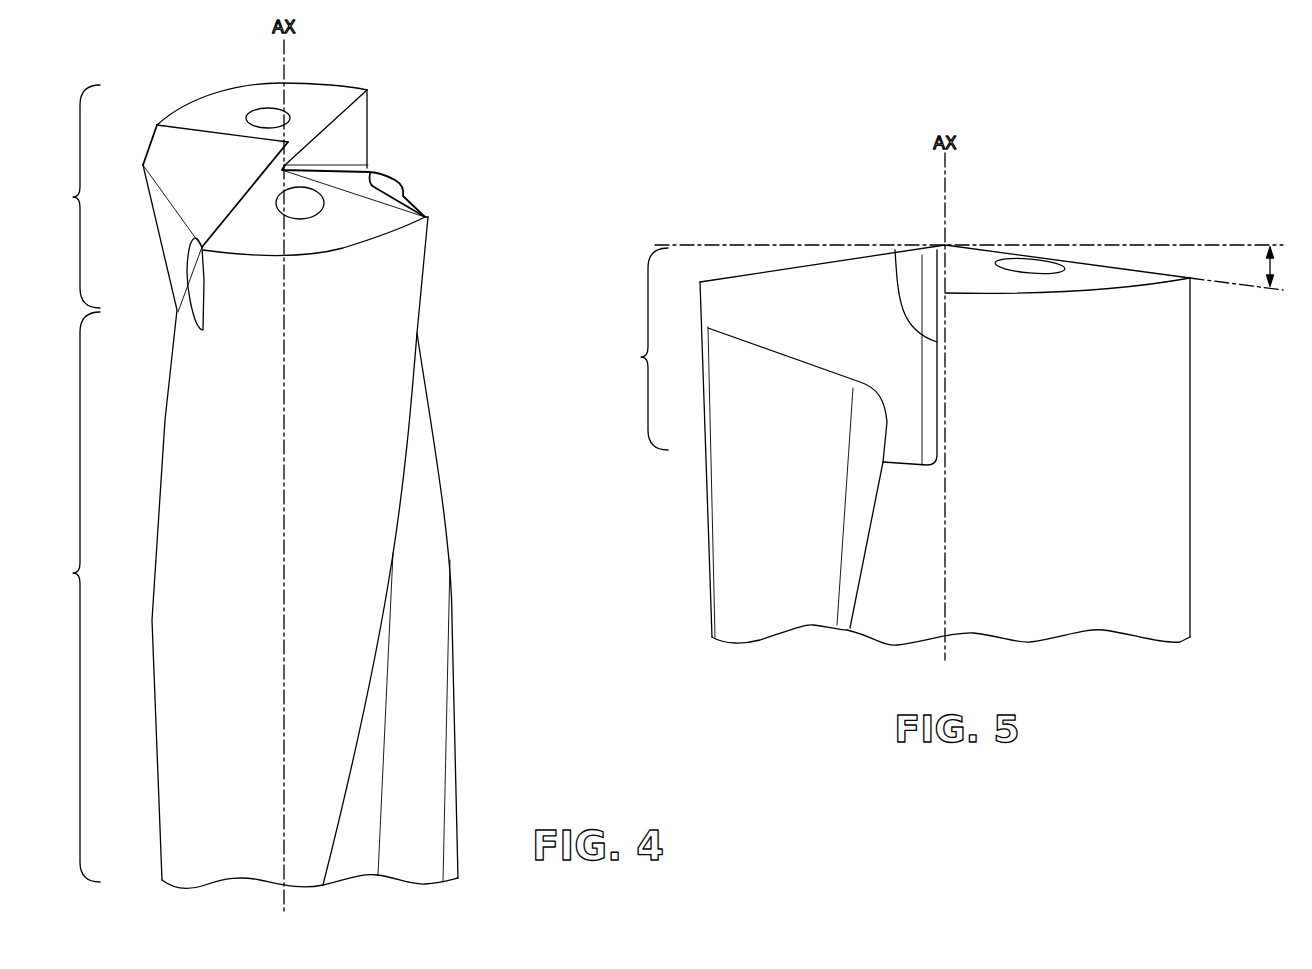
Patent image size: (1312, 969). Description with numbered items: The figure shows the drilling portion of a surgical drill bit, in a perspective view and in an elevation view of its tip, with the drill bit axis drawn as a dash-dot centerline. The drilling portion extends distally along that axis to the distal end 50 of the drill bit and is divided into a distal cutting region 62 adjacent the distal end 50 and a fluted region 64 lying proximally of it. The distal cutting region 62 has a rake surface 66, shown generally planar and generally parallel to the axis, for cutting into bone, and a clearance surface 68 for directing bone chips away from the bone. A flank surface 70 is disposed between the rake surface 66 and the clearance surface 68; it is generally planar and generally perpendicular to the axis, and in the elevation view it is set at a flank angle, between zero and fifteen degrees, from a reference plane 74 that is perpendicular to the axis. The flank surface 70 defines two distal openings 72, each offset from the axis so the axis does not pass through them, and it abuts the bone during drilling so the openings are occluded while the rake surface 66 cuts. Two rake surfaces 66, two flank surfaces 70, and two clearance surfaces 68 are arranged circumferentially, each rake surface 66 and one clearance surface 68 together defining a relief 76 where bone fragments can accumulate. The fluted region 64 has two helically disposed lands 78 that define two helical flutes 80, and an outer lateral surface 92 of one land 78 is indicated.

In FIG. 4, the distal end 50 is at (290, 142).
In FIG. 5, the distal end 50 is at (945, 245).
In FIG. 4, the distal cutting region 62 is at (73, 196).
In FIG. 5, the distal cutting region 62 is at (639, 349).
In FIG. 4, the fluted region 64 is at (73, 597).
In FIG. 4, the rake surface 66 is at (363, 108).
In FIG. 5, the rake surface 66 is at (897, 245).
In FIG. 4, the clearance surface 68 is at (190, 157).
In FIG. 5, the clearance surface 68 is at (752, 313).
In FIG. 4, the flank surface 70 is at (323, 97).
In FIG. 5, the flank surface 70 is at (820, 263).
In FIG. 4, the distal opening 72 is at (262, 118).
In FIG. 5, the distal opening 72 is at (1035, 270).
In FIG. 5, the reference plane 74 is at (1230, 245).
In FIG. 4, the relief 76 is at (405, 134).
In FIG. 5, the relief 76 is at (823, 333).
In FIG. 4, the land 78 is at (340, 540).
In FIG. 4, the flute 80 is at (404, 680).
In FIG. 5, the flute 80 is at (765, 537).
In FIG. 4, the outer lateral surface 92 is at (380, 445).